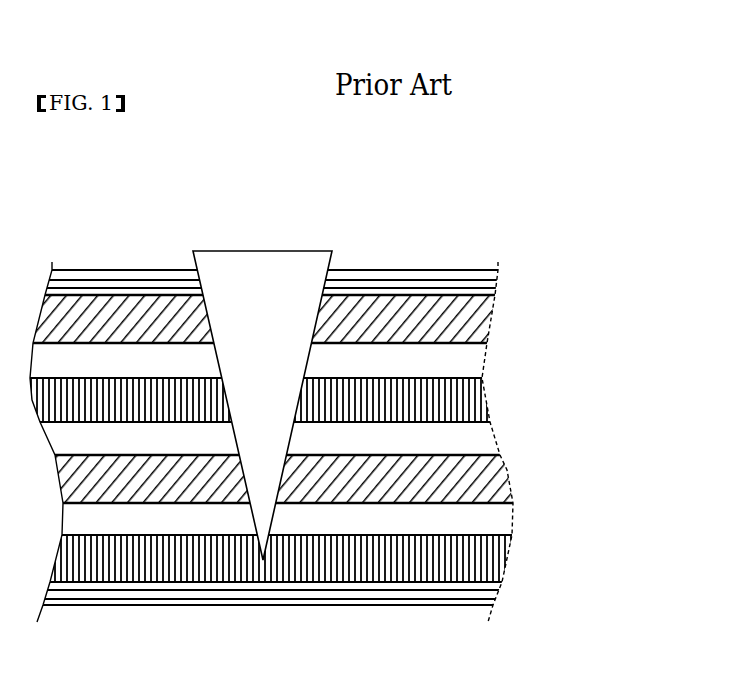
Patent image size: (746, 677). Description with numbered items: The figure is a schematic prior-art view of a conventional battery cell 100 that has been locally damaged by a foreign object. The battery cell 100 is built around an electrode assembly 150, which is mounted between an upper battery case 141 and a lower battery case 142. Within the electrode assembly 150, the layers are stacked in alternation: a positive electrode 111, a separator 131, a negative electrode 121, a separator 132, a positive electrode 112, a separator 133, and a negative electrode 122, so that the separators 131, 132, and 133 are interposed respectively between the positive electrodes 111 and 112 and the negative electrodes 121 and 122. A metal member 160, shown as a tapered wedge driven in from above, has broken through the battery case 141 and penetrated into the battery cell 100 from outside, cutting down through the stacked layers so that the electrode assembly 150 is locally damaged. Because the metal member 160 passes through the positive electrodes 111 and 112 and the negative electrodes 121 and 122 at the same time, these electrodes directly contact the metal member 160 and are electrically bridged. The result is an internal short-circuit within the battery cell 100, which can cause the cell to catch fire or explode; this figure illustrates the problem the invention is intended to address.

The battery cell 100 is at (359, 405).
The metal member 160 is at (309, 251).
The battery case 141 is at (500, 283).
The positive electrode 111 is at (488, 327).
The separator 131 is at (480, 365).
The negative electrode 121 is at (488, 407).
The separator 132 is at (500, 447).
The positive electrode 112 is at (510, 483).
The separator 133 is at (512, 522).
The negative electrode 122 is at (313, 558).
The battery case 142 is at (497, 593).
The electrode assembly 150 is at (359, 424).